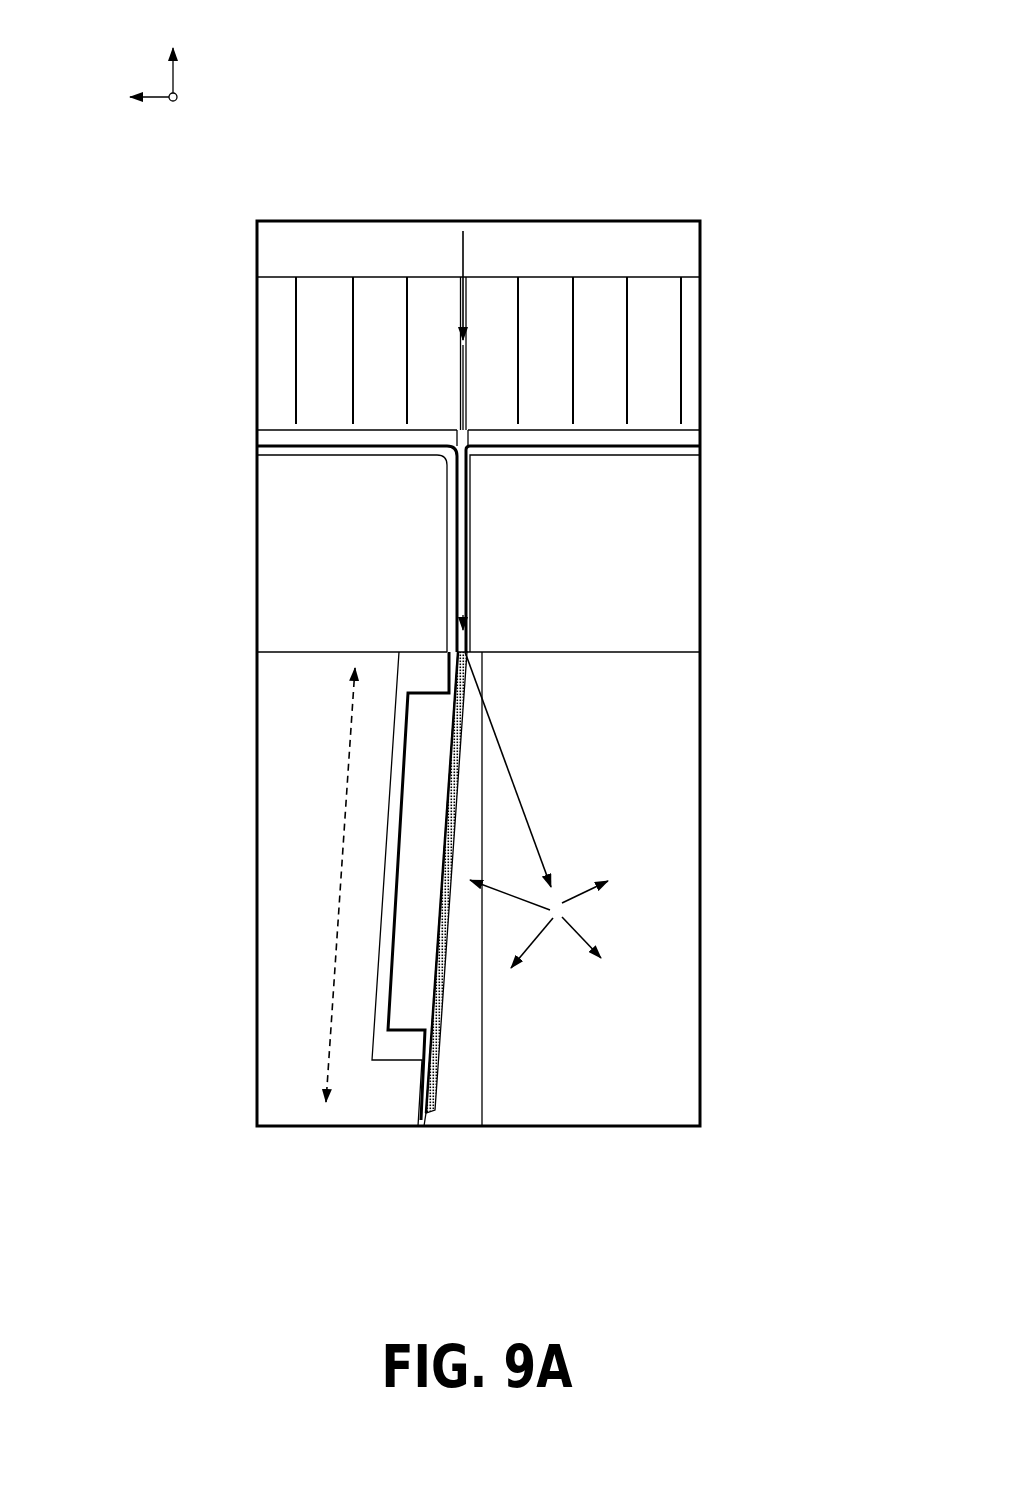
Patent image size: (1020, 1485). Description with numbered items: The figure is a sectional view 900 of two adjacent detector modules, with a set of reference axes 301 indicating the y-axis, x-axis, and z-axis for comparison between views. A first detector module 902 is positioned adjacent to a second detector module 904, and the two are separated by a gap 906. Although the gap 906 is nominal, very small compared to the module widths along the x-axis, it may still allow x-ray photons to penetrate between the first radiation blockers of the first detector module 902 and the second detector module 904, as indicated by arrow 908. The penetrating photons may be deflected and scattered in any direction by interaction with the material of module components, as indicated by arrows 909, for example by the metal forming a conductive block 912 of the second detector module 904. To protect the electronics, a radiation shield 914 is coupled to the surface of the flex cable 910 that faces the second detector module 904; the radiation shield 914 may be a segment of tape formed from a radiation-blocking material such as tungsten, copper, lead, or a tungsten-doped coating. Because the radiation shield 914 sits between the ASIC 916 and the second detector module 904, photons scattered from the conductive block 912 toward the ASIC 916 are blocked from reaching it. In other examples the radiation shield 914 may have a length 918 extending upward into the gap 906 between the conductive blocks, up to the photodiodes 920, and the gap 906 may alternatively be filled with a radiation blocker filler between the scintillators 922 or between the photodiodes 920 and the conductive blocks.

The reference axes 301 is at (150, 44).
The sectional view 900 is at (329, 134).
The first detector module 902 is at (245, 272).
The second detector module 904 is at (719, 264).
The gap 906 is at (469, 266).
The arrow 908 is at (461, 270).
The arrows 909 is at (580, 940).
The flex cable 910 is at (455, 553).
The conductive block 912 is at (582, 795).
The radiation shield 914 is at (443, 995).
The ASIC 916 is at (410, 868).
The length 918 is at (340, 912).
The photodiodes 920 is at (258, 442).
The scintillators 922 is at (374, 275).